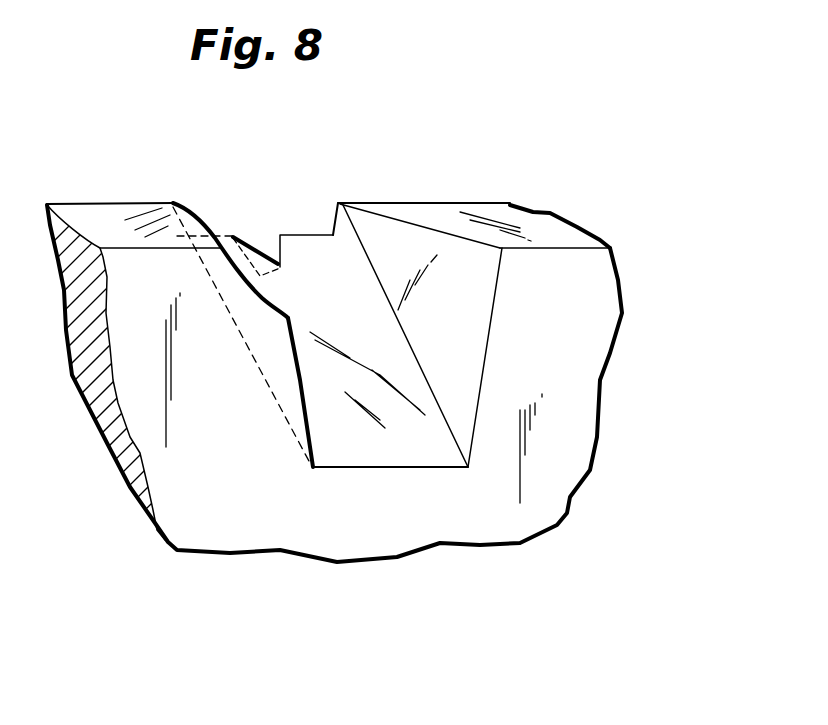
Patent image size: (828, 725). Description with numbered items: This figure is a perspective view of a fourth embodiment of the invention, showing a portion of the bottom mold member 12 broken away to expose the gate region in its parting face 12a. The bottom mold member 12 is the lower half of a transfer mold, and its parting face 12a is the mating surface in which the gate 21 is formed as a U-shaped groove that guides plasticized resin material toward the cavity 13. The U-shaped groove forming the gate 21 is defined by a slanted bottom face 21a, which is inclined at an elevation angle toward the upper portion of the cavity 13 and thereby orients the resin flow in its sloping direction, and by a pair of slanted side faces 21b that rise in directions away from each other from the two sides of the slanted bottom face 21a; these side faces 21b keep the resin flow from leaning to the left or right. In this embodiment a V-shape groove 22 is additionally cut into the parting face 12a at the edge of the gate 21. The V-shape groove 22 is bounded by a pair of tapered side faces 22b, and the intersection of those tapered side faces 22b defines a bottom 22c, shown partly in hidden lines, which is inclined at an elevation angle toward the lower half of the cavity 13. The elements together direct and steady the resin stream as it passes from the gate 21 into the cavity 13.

The bottom mold member 12 is at (627, 272).
The parting face 12a is at (518, 209).
The cavity 13 is at (411, 122).
The gate 21 is at (445, 470).
The slanted bottom face 21a is at (357, 340).
The slanted side faces 21b is at (493, 323).
The V-shape groove 22 is at (257, 213).
The tapered side faces 22b is at (252, 238).
The bottom 22c is at (265, 274).